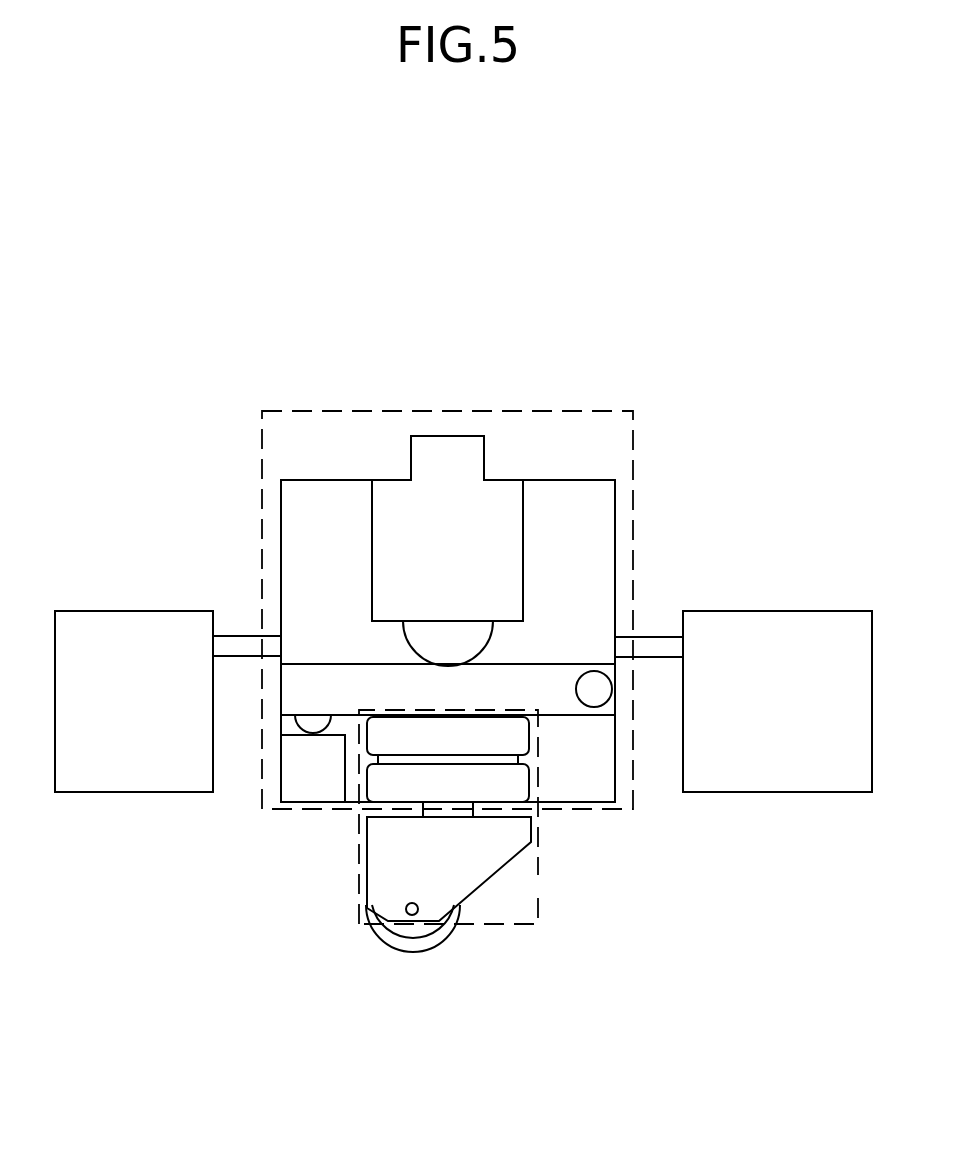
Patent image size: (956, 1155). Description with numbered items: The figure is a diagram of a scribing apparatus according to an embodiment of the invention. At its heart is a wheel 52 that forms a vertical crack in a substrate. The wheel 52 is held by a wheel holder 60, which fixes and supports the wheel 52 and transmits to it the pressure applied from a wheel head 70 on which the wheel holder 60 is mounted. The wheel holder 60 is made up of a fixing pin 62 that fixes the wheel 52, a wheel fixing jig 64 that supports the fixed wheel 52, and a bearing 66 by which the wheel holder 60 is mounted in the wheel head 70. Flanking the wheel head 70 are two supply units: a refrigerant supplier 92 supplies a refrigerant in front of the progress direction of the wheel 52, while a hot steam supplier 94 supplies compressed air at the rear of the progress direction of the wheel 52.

The wheel head 70 is at (633, 452).
The hot steam supplier 94 is at (157, 611).
The refrigerant supplier 92 is at (738, 611).
The wheel holder 60 is at (538, 878).
The bearing 66 is at (530, 784).
The wheel fixing jig 64 is at (531, 829).
The fixing pin 62 is at (406, 907).
The wheel 52 is at (403, 932).